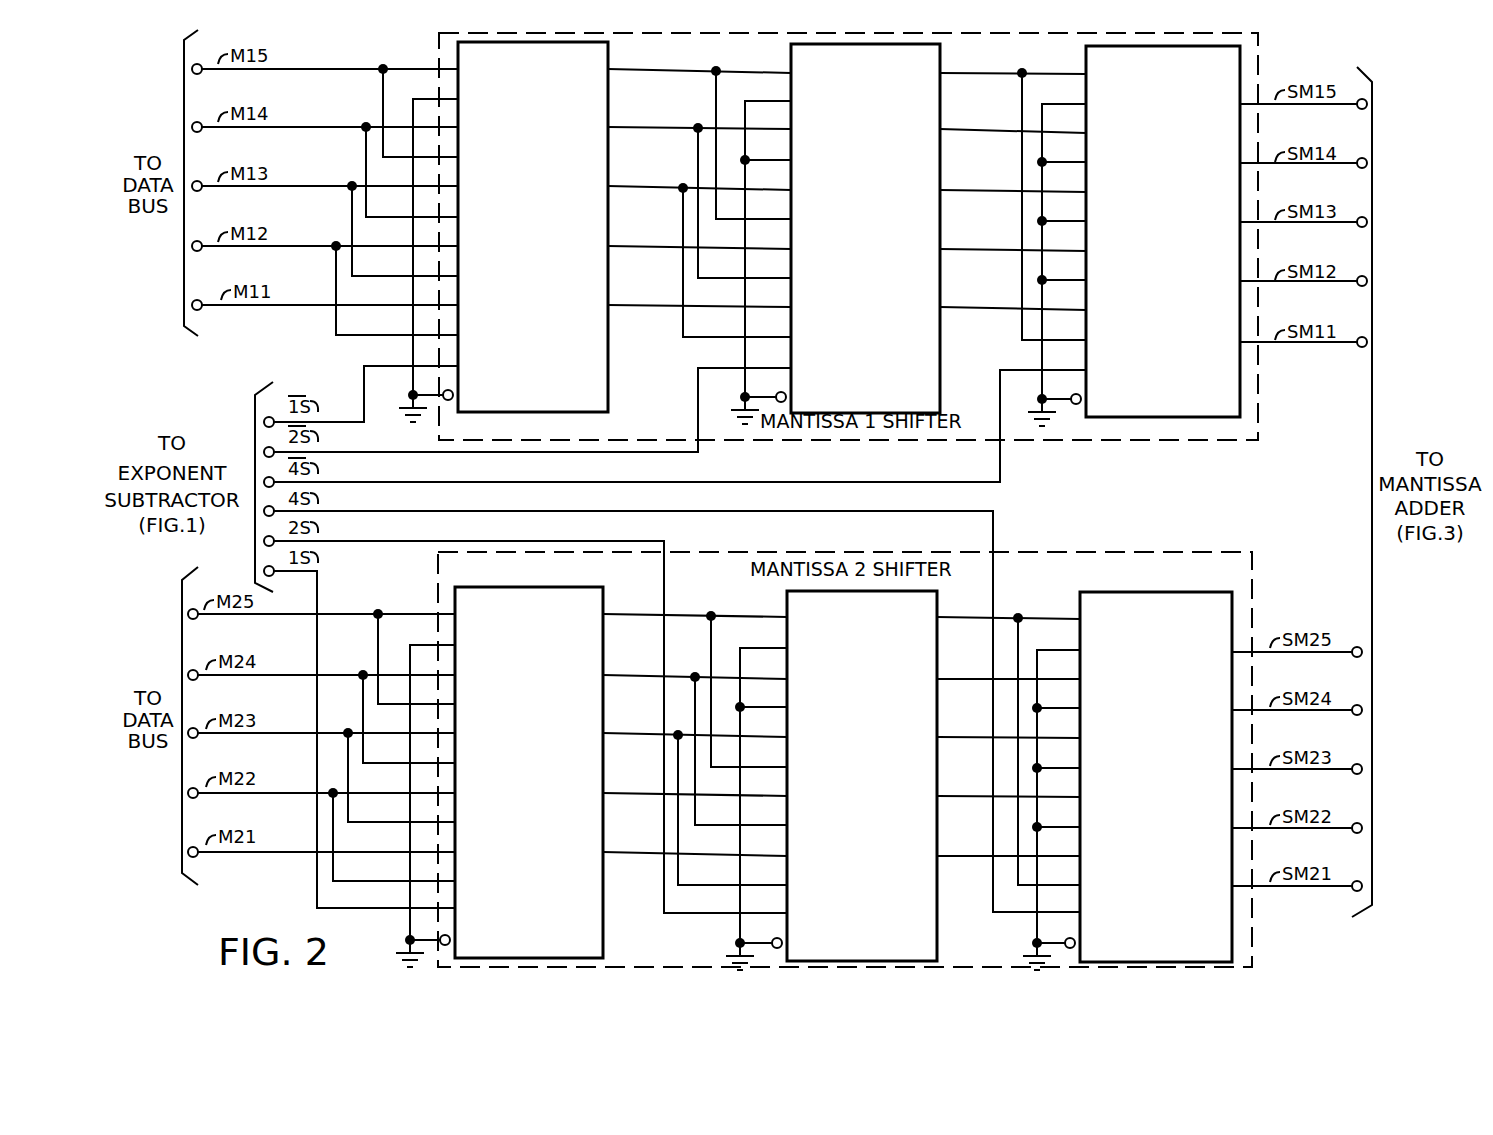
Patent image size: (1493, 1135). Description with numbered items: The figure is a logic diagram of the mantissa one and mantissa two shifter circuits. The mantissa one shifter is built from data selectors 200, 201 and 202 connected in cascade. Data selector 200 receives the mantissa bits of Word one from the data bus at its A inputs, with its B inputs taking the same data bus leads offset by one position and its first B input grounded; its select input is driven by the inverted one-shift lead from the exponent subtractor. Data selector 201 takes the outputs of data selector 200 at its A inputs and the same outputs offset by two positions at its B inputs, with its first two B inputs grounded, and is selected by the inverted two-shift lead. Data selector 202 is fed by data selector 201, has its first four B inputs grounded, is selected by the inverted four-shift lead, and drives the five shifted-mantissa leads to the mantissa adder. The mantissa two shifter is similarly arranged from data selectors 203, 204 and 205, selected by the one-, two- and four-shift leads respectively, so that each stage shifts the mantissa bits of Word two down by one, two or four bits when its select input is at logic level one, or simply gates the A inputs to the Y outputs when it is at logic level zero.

The data selector 200 is at (513, 282).
The data selector 201 is at (844, 283).
The data selector 202 is at (1152, 308).
The data selector 203 is at (512, 828).
The data selector 204 is at (840, 830).
The data selector 205 is at (1135, 855).